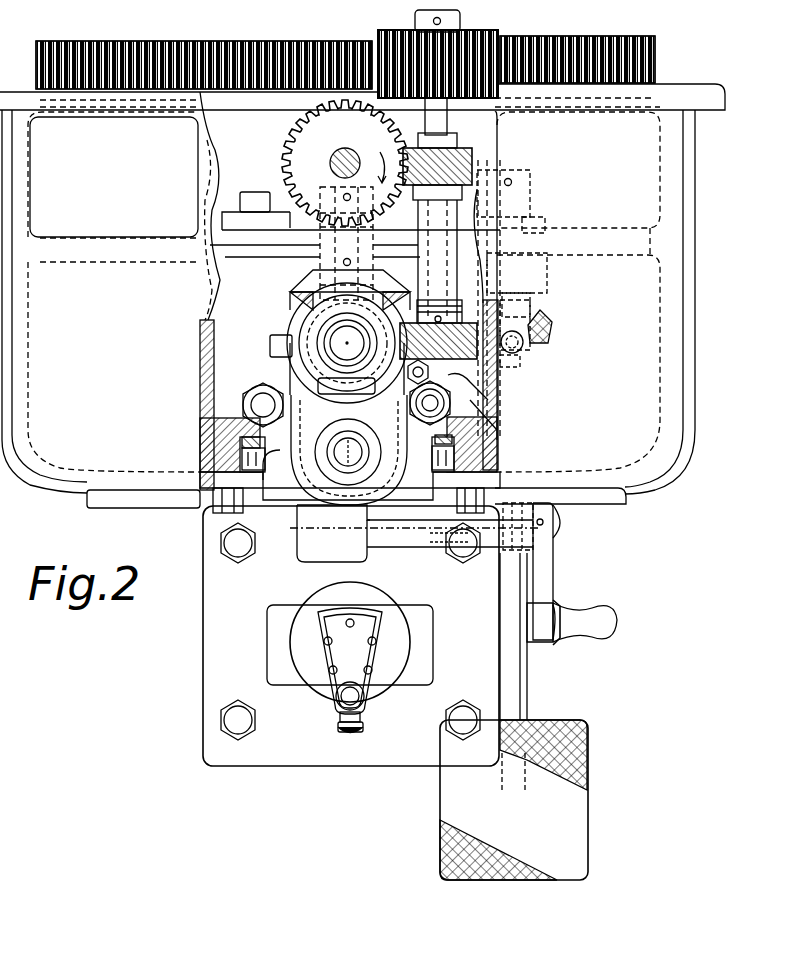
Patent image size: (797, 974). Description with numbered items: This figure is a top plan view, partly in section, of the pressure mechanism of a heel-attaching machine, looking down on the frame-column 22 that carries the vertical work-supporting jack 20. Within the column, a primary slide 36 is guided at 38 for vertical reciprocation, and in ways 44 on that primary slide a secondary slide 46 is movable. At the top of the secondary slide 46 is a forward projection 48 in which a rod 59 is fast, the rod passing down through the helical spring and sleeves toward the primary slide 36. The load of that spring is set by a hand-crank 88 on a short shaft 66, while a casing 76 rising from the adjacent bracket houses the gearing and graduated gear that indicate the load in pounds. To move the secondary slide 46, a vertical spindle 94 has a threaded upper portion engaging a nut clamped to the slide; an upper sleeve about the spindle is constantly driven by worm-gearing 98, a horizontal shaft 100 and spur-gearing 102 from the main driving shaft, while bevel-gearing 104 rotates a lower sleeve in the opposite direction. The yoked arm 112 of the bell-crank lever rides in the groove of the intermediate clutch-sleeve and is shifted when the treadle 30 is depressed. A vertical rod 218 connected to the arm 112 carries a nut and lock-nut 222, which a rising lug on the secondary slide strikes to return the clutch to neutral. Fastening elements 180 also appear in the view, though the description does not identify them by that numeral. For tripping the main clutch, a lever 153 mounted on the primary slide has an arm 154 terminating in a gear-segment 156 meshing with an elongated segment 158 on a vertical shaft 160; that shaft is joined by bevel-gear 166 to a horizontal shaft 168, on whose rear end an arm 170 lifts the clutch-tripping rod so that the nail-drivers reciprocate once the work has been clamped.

The spur-gearing 102 is at (498, 32).
The horizontal shaft 100 is at (452, 120).
The arm 170 is at (448, 187).
The horizontal shaft 168 is at (522, 248).
The worm-gearing 98 is at (415, 323).
The bevel-gearing 104 is at (313, 305).
The vertical spindle 94 is at (337, 342).
The yoked arm 112 is at (300, 366).
The secondary slide 46 is at (310, 403).
The bolt 180 is at (262, 405).
The nut and lock-nut 222 is at (346, 386).
The vertical rod 218 is at (430, 364).
The lever 153 is at (440, 398).
The arm 154 is at (495, 365).
The gear-segment 156 is at (507, 372).
The elongated segment 158 is at (522, 360).
The vertical shaft 160 is at (523, 350).
The bevel-gear 166 is at (550, 338).
The primary slide 36 is at (260, 448).
The guides 38 is at (250, 460).
The ways 44 is at (282, 475).
The rod 59 is at (343, 470).
The forward projection 48 is at (370, 490).
The casing 76 is at (415, 535).
The frame-column 22 is at (625, 492).
The short shaft 66 is at (557, 520).
The hand-crank 88 is at (557, 640).
The treadle 30 is at (552, 720).
The work-supporting jack 20 is at (323, 683).